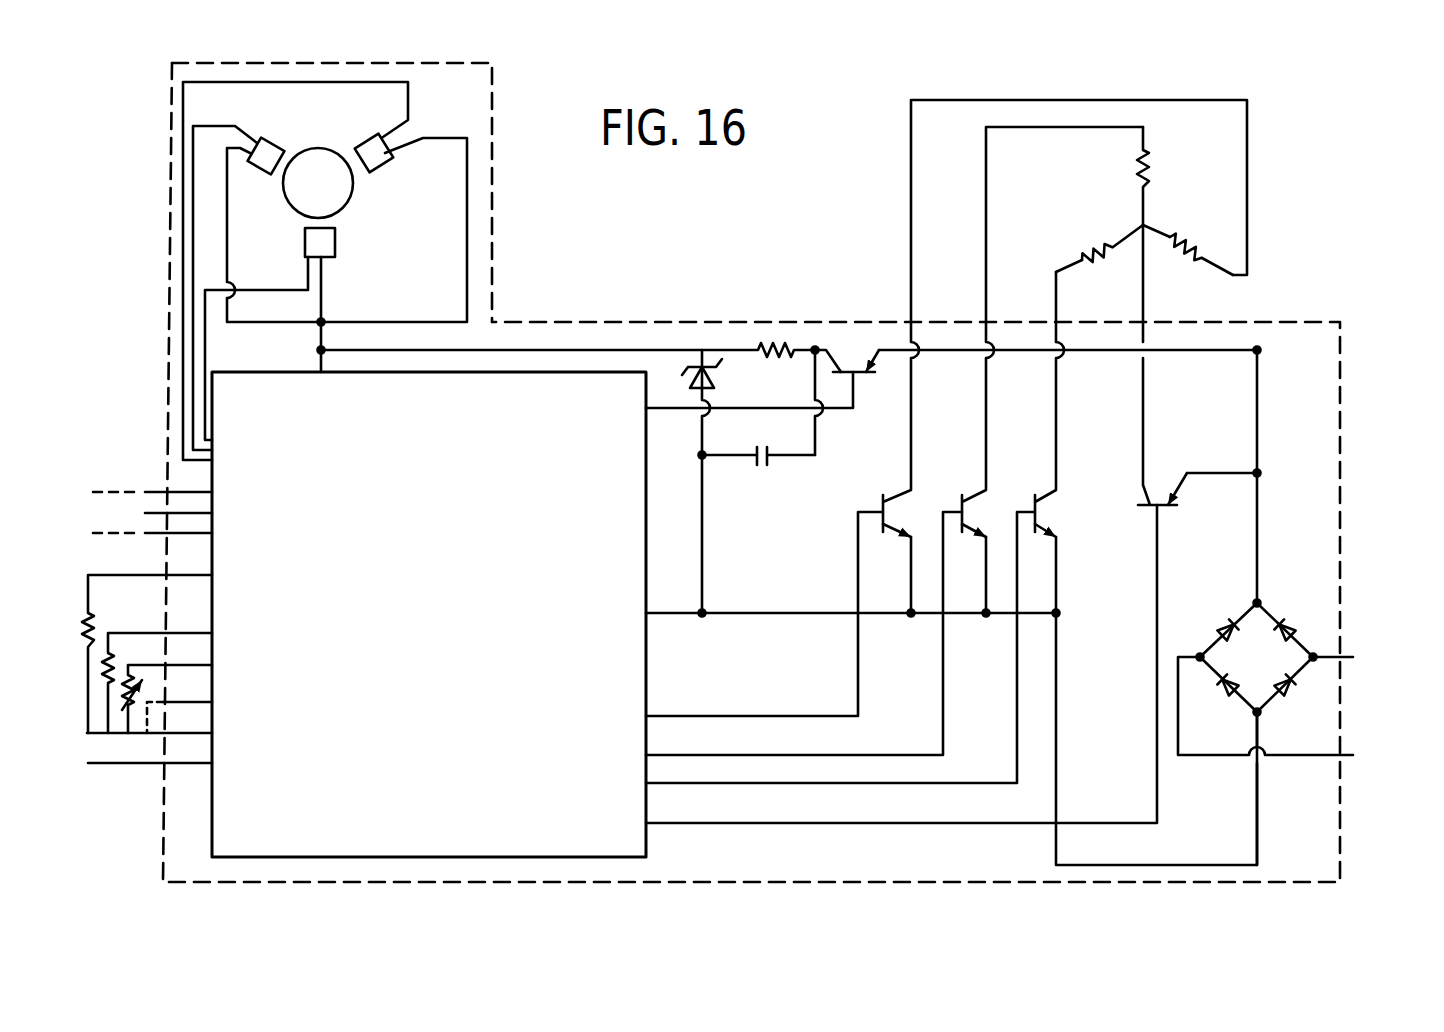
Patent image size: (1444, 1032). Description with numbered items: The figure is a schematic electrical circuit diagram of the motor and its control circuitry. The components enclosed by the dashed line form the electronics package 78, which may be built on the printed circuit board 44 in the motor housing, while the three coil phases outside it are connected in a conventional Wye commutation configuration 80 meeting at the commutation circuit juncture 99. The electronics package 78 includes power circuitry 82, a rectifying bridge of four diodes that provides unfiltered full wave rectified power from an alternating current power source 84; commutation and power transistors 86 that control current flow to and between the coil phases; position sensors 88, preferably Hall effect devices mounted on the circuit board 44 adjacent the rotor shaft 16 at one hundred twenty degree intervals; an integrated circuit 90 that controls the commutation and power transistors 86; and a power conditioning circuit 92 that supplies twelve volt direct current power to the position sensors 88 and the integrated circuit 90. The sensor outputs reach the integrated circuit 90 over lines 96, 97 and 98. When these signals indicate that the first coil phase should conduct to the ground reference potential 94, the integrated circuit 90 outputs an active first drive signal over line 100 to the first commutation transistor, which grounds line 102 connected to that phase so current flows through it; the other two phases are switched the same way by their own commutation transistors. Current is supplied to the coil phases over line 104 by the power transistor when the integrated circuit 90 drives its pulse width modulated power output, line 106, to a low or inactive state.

The rotor shaft 16 is at (311, 186).
The printed circuit board 44 is at (772, 867).
The electronics package 78 is at (613, 307).
The Wye commutation configuration 80 is at (1266, 232).
The power circuitry 82 is at (1314, 636).
The alternating current power source 84 is at (1380, 708).
The commutation and power transistors 86 is at (1086, 524).
The position sensors 88 is at (420, 211).
The integrated circuit 90 is at (420, 837).
The power conditioning circuit 92 is at (802, 343).
The ground reference potential 94 is at (733, 614).
The position sensor output line 96 is at (183, 208).
The position sensor output line 97 is at (193, 255).
The position sensor output line 98 is at (205, 320).
The commutation circuit juncture 99 is at (1145, 225).
The DRIVE 1 line 100 is at (737, 784).
The coil phase 01 line 102 is at (1057, 302).
The coil supply line 104 is at (1143, 293).
The PWM PWR line 106 is at (820, 824).